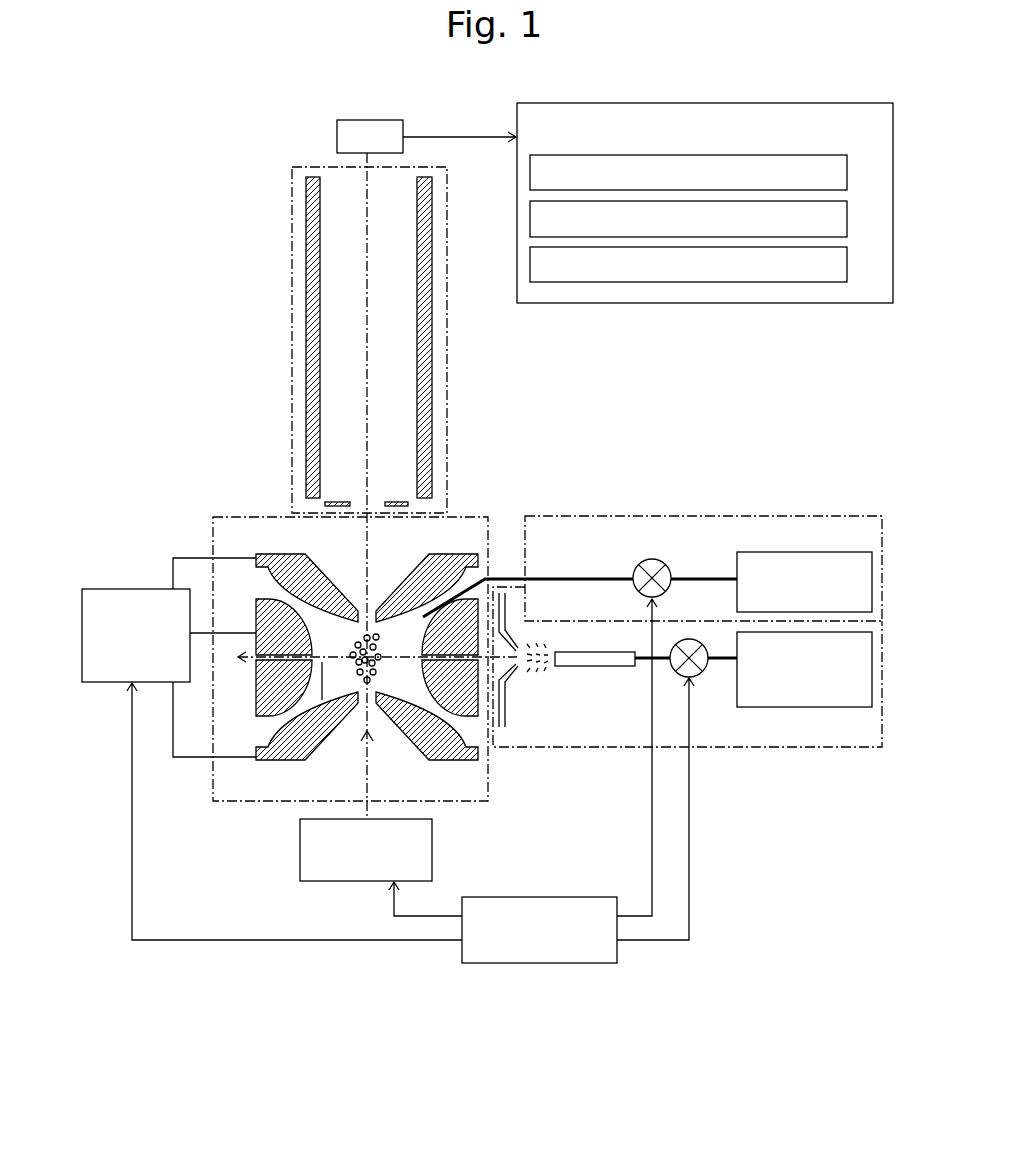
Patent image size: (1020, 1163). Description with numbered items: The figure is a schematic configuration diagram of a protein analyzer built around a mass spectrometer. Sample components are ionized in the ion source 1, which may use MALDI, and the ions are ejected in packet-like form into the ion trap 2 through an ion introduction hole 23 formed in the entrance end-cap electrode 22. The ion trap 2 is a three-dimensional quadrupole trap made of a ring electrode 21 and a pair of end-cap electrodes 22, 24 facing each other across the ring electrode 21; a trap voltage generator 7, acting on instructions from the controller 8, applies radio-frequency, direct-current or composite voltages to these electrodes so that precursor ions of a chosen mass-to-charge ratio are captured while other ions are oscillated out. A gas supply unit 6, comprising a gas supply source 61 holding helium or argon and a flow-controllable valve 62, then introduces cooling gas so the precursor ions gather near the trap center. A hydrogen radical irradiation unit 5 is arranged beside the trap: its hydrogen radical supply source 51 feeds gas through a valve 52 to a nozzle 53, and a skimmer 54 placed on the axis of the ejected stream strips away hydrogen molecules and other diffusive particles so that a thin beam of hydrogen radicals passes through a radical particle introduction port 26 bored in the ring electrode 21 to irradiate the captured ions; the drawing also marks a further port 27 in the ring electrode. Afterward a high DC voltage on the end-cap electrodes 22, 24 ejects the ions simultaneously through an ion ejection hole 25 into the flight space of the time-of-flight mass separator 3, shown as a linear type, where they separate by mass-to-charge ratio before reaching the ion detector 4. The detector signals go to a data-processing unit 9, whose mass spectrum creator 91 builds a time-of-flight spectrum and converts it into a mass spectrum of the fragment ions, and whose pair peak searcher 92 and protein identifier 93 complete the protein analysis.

The ion source 1 is at (300, 836).
The ion trap 2 is at (470, 516).
The time-of-flight mass separator 3 is at (291, 257).
The ion detector 4 is at (372, 120).
The hydrogen radical irradiation unit 5 is at (732, 749).
The gas supply unit 6 is at (748, 516).
The trap voltage generator 7 is at (120, 589).
The controller 8 is at (586, 897).
The data-processing unit 9 is at (703, 103).
The mass spectrum creator 91 is at (848, 166).
The pair peak searcher 92 is at (848, 212).
The protein identifier 93 is at (848, 258).
The ring electrode 21 is at (255, 704).
The entrance end-cap electrode 22 is at (263, 762).
The ion introduction hole 23 is at (372, 703).
The end-cap electrode 24 is at (266, 554).
The ion ejection hole 25 is at (370, 613).
The radical particle introduction port 26 is at (412, 662).
The radical particle discharge port 27 is at (322, 700).
The hydrogen radical supply source 51 is at (810, 708).
The valve 52 is at (686, 676).
The nozzle 53 is at (592, 667).
The skimmer 54 is at (510, 702).
The gas supply source 61 is at (808, 552).
The valve 62 is at (659, 562).